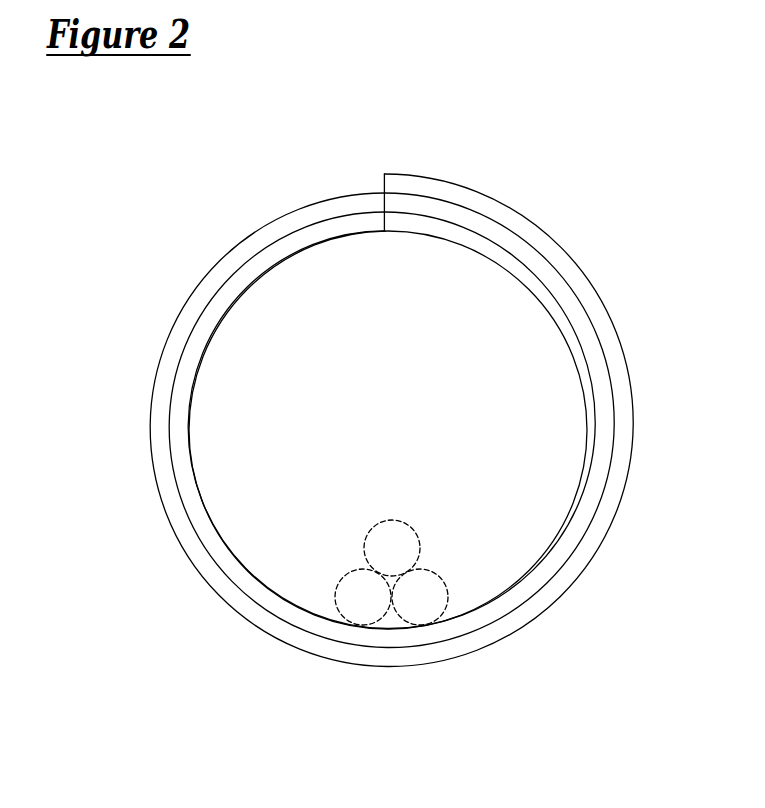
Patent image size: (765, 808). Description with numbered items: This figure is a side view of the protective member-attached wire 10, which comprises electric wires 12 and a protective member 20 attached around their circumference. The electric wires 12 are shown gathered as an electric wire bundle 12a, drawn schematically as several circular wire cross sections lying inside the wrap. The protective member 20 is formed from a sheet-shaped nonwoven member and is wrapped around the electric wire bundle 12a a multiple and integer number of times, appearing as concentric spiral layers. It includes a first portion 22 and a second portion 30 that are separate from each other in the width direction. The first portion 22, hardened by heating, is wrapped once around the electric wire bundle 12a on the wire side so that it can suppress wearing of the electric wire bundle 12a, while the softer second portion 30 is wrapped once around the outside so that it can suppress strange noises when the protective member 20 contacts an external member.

The protective member-attached wire 10 is at (257, 148).
The protective member 20 is at (578, 260).
The second portion 30 is at (333, 207).
The first portion 22 is at (448, 213).
The electric wire 12 is at (445, 580).
The electric wire bundle 12a is at (513, 580).